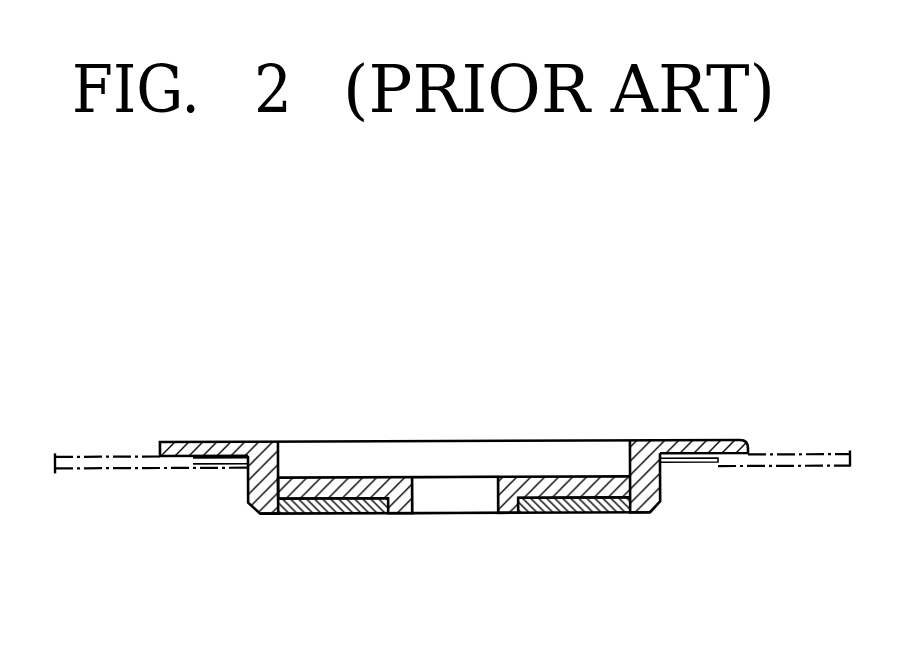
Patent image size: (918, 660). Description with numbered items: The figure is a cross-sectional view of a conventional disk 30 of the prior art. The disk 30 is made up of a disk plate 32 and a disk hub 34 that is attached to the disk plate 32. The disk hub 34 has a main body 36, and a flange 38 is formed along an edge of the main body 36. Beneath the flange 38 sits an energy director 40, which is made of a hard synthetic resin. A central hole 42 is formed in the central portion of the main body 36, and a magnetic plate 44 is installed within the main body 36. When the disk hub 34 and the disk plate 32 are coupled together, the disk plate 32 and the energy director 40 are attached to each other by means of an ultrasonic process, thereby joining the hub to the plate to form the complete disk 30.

The disk 30 is at (140, 353).
The disk plate 32 is at (808, 466).
The disk hub 34 is at (582, 430).
The main body 36 is at (652, 515).
The flange 38 is at (742, 440).
The energy director 40 is at (718, 463).
The central hole 42 is at (412, 495).
The magnetic plate 44 is at (570, 515).